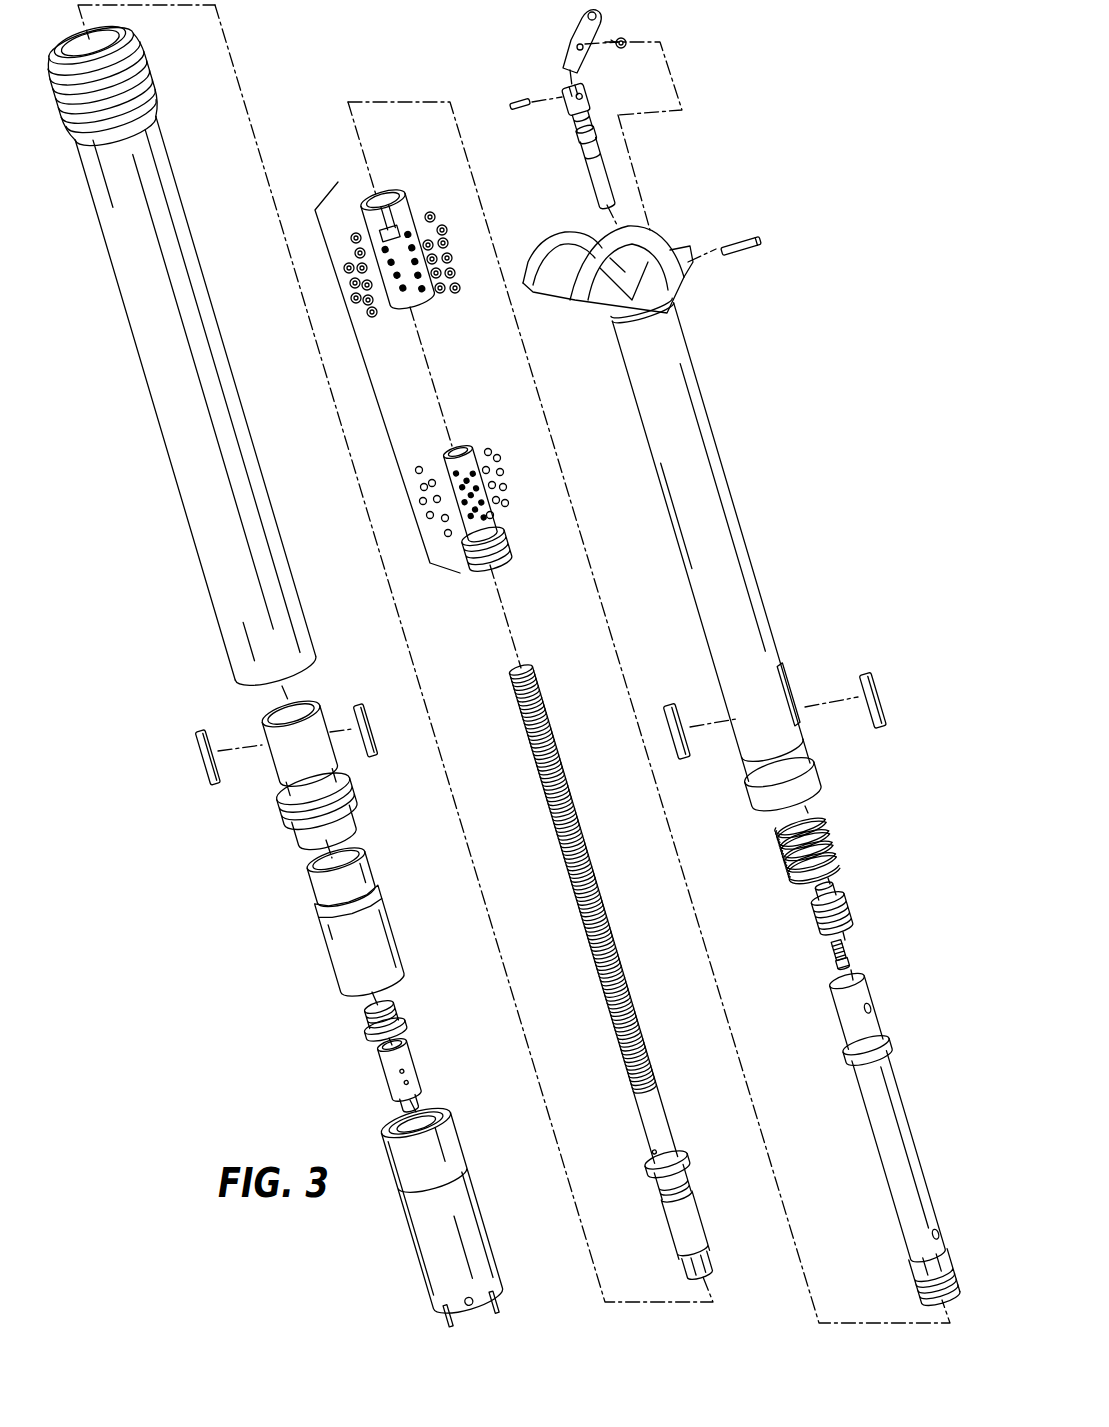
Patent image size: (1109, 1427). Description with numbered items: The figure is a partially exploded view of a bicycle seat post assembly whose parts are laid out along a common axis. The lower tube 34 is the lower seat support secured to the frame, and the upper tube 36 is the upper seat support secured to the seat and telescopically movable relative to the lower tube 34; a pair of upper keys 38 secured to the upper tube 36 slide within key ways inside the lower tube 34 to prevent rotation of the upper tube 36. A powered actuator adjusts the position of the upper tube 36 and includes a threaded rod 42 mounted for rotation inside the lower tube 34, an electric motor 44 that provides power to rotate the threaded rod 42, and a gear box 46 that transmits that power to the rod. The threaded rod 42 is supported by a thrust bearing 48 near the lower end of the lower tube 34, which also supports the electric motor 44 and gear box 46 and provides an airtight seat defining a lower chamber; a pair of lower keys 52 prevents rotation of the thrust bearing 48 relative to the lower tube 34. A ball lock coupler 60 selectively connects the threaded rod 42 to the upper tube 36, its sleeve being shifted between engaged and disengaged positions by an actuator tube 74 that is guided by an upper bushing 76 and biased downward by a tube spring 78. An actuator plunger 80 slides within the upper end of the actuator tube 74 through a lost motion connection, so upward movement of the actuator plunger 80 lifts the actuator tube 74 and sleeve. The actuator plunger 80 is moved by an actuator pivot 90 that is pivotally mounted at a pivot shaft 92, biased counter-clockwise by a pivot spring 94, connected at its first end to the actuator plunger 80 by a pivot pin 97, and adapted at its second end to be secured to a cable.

The lower tube 34 is at (185, 425).
The upper tube 36 is at (712, 508).
The upper keys 38 is at (681, 705).
The threaded rod 42 is at (600, 975).
The electric motor 44 is at (425, 1236).
The gear box 46 is at (337, 943).
The thrust bearing 48 is at (295, 788).
The lower keys 52 is at (192, 752).
The ball lock coupler 60 is at (334, 278).
The actuator tube 74 is at (873, 1107).
The upper bushing 76 is at (845, 1057).
The tube spring 78 is at (778, 836).
The actuator plunger 80 is at (605, 180).
The actuator pivot 90 is at (575, 27).
The pivot shaft 92 is at (742, 240).
The pivot spring 94 is at (642, 27).
The pivot pin 97 is at (518, 100).